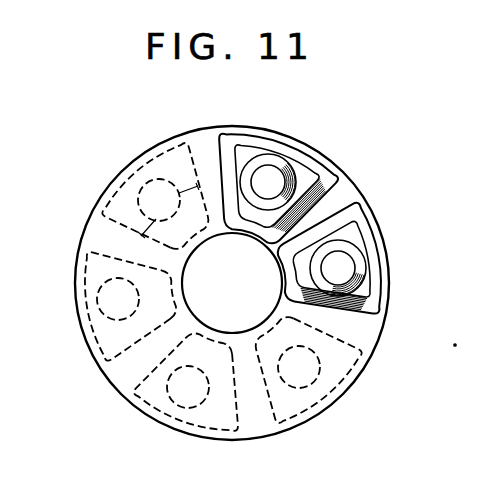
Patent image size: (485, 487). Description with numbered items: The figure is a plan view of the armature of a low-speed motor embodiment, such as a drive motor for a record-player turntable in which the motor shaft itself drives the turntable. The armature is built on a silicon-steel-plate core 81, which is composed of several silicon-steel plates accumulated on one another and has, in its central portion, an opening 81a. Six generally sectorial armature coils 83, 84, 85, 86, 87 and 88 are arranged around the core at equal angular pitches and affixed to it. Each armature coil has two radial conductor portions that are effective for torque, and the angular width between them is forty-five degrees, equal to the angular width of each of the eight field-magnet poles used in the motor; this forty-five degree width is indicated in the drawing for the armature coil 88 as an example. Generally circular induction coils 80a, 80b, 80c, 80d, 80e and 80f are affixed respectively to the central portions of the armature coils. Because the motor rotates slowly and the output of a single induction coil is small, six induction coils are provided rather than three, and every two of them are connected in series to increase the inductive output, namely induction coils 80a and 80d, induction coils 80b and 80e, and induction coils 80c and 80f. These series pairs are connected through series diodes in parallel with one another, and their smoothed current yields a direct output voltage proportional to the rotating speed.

The silicon-steel-plate core 81 is at (203, 128).
The opening 81a is at (204, 240).
The induction coil 80a is at (277, 160).
The induction coil 80b is at (356, 265).
The induction coil 80c is at (316, 383).
The induction coil 80d is at (155, 407).
The induction coil 80e is at (97, 292).
The induction coil 80f is at (138, 178).
The armature coil 83 is at (320, 160).
The armature coil 84 is at (375, 235).
The armature coil 85 is at (299, 424).
The armature coil 86 is at (171, 428).
The armature coil 87 is at (74, 326).
The armature coil 88 is at (110, 190).